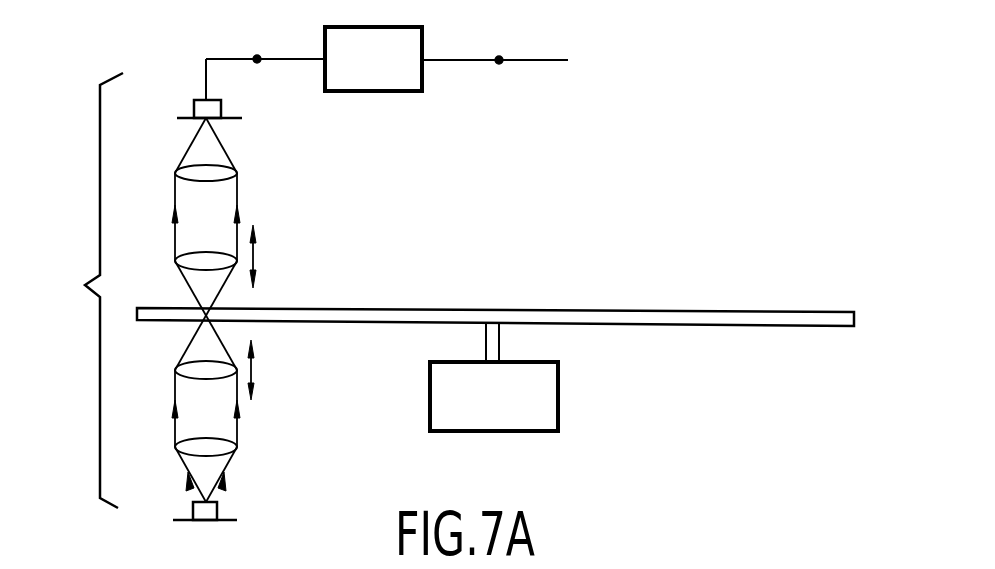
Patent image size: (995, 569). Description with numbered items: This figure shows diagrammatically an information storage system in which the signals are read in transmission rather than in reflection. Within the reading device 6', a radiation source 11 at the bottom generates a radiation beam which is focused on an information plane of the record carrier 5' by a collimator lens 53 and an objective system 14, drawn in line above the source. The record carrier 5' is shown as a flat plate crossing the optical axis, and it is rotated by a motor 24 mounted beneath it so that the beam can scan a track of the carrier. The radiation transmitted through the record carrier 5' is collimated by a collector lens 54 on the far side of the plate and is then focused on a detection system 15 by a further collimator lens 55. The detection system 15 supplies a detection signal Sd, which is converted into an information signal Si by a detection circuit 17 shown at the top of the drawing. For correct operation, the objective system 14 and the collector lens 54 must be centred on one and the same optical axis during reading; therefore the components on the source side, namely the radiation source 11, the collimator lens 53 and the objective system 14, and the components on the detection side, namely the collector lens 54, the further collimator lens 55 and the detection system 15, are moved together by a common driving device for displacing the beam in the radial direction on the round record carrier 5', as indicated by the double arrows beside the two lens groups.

The reading device 6' is at (81, 290).
The record carrier 5' is at (522, 304).
The detection signal Sd is at (257, 37).
The information signal Si is at (505, 39).
The detection system 15 is at (222, 108).
The detection circuit 17 is at (393, 81).
The further collimator lens 55 is at (178, 173).
The collector lens 54 is at (178, 261).
The objective system 14 is at (178, 371).
The collimator lens 53 is at (178, 449).
The radiation source 11 is at (219, 516).
The motor 24 is at (545, 405).